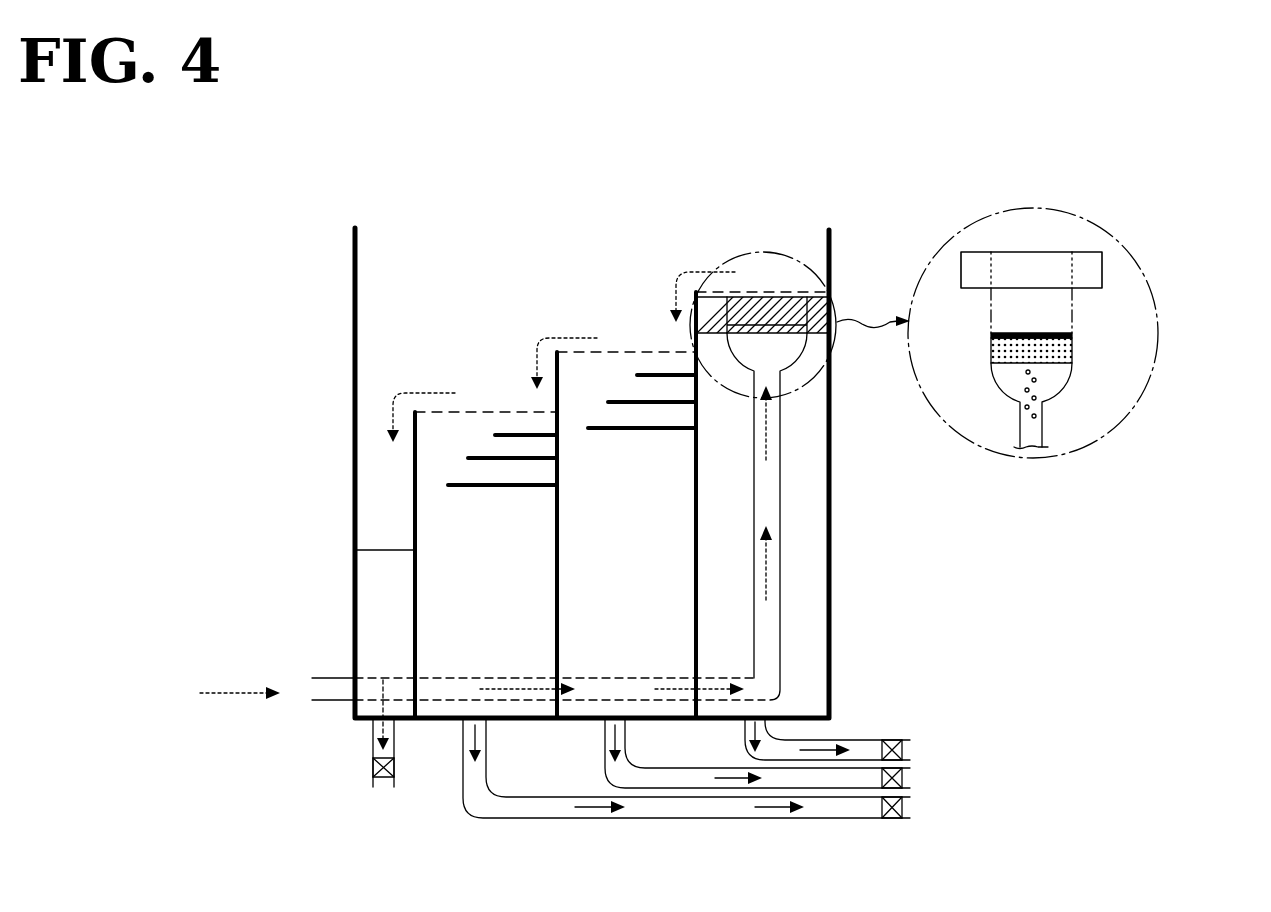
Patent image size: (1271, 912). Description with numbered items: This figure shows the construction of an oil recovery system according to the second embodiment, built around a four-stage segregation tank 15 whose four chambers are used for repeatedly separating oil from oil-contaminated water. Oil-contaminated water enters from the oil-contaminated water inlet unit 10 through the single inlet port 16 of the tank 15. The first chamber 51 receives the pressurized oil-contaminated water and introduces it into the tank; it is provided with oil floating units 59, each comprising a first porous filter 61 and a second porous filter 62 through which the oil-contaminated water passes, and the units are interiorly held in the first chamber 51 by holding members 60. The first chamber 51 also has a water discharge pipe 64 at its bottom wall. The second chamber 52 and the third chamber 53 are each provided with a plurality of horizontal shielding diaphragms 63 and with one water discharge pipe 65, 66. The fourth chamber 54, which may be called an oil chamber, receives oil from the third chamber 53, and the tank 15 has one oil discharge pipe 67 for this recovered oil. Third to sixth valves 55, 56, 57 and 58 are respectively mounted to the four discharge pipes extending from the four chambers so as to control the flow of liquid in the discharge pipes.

The oil-contaminated water inlet unit 10 is at (224, 694).
The segregation tank 15 is at (352, 265).
The inlet port 16 is at (327, 700).
The first chamber 51 is at (823, 567).
The second chamber 52 is at (636, 596).
The third chamber 53 is at (500, 596).
The fourth chamber 54 is at (365, 597).
The third valve 55 is at (892, 742).
The fourth valve 56 is at (902, 778).
The fifth valve 57 is at (903, 808).
The sixth valve 58 is at (384, 780).
The oil floating unit 59 is at (1049, 319).
The holding member 60 is at (1097, 265).
The first porous filter 61 is at (1102, 356).
The second porous filter 62 is at (1062, 335).
The horizontal shielding diaphragm 63 is at (645, 365).
The water discharge pipe 64 is at (844, 707).
The water discharge pipe 65 is at (797, 805).
The water discharge pipe 66 is at (726, 805).
The oil discharge pipe 67 is at (363, 766).